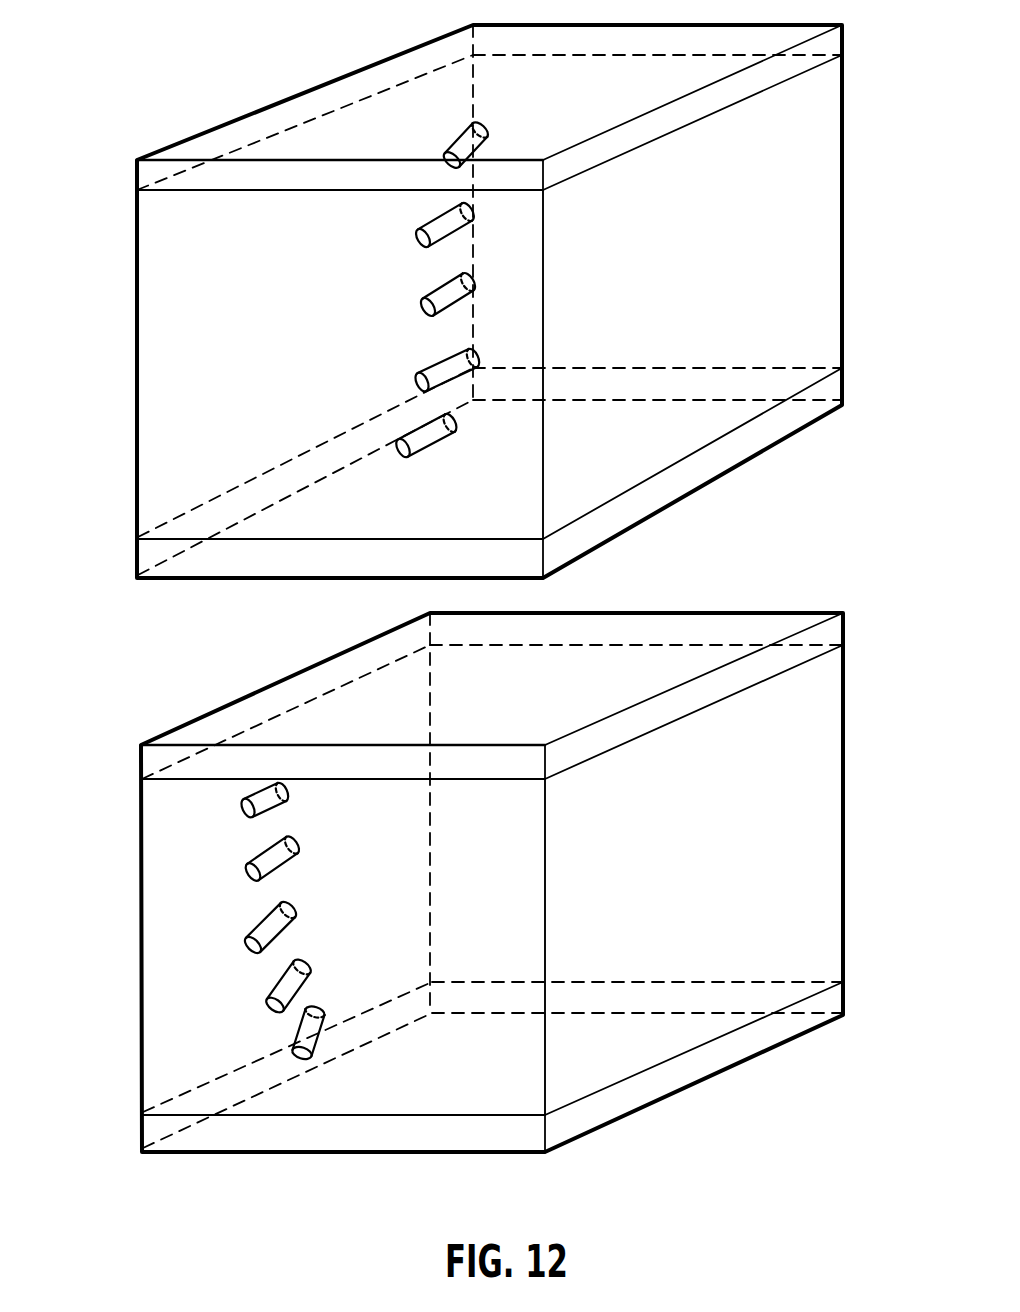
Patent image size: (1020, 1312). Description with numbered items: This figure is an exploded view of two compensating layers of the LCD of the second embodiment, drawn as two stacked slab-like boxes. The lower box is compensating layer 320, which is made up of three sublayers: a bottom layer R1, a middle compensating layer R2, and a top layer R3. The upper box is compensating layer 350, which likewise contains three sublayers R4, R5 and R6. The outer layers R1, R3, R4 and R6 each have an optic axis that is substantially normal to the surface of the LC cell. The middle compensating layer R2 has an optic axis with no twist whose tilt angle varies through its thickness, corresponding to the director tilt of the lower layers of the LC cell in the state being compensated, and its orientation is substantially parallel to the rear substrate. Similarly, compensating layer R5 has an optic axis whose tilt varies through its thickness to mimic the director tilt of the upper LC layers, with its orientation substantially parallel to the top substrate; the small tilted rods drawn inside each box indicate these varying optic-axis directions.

The compensating layer 350 is at (483, 301).
The compensating layer 320 is at (485, 882).
The layer R6 is at (137, 180).
The compensating layer R5 is at (137, 357).
The layer R4 is at (137, 559).
The layer R3 is at (141, 766).
The compensating layer R2 is at (141, 970).
The layer R1 is at (142, 1133).